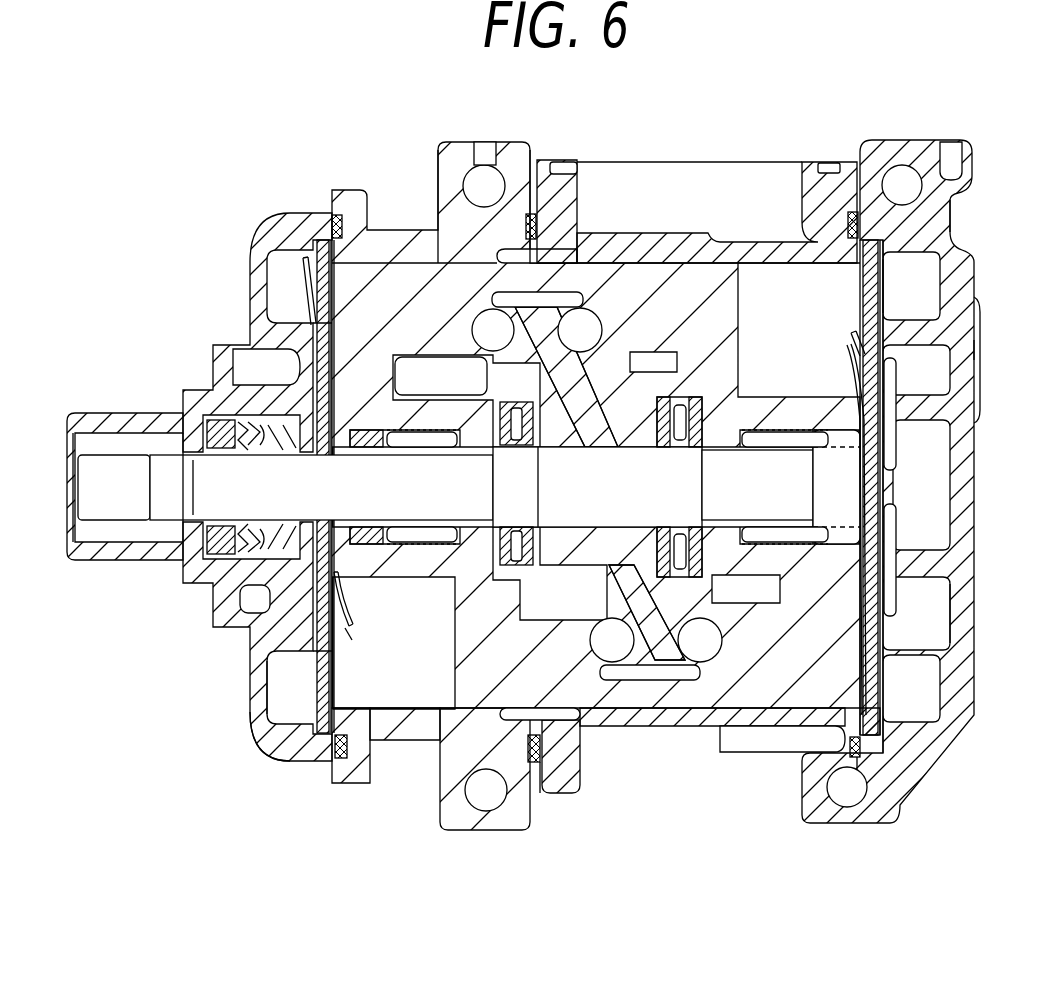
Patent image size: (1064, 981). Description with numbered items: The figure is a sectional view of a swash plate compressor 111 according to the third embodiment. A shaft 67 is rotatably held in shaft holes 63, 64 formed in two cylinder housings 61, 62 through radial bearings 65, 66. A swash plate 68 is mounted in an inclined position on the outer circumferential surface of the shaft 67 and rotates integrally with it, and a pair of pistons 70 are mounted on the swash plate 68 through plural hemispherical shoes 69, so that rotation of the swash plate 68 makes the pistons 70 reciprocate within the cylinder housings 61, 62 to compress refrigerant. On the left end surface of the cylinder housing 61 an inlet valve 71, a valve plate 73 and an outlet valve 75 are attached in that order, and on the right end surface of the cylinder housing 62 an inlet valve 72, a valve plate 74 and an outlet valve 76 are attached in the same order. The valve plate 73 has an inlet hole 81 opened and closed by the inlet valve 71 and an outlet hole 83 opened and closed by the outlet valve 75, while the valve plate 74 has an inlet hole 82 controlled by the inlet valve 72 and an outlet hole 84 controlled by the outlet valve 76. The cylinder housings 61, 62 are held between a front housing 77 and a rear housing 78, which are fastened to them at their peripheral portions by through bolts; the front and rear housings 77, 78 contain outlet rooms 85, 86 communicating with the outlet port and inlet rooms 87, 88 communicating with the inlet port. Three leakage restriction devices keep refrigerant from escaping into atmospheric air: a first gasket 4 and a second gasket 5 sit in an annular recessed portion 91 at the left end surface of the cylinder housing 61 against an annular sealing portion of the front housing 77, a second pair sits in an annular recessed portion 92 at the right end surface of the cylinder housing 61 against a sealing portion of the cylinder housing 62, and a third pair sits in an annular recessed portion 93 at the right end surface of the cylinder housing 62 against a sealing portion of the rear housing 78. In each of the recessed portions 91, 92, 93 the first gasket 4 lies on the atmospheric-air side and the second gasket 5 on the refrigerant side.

The compressor 111 is at (206, 163).
The first gasket 4 is at (333, 758).
The second gasket 5 is at (330, 760).
The cylinder housing 61 is at (450, 192).
The cylinder housing 62 is at (640, 240).
The shaft hole 63 is at (357, 434).
The shaft hole 64 is at (724, 449).
The radial bearing 65 is at (445, 434).
The radial bearing 66 is at (783, 440).
The shaft 67 is at (118, 470).
The swash plate 68 is at (648, 657).
The hemispherical shoes 69 is at (609, 657).
The pistons 70 is at (680, 272).
The inlet valve 71 is at (348, 602).
The inlet valve 72 is at (860, 373).
The valve plate 73 is at (310, 637).
The valve plate 74 is at (890, 548).
The outlet valve 75 is at (312, 697).
The outlet valve 76 is at (960, 255).
The front housing 77 is at (257, 305).
The rear housing 78 is at (960, 382).
The inlet hole 81 is at (352, 641).
The inlet hole 82 is at (847, 347).
The outlet hole 83 is at (327, 693).
The outlet hole 84 is at (870, 290).
The outlet room 85 is at (285, 707).
The outlet room 86 is at (915, 285).
The inlet room 87 is at (245, 597).
The inlet room 88 is at (968, 352).
The annular recessed portion 91 is at (323, 232).
The annular recessed portion 92 is at (533, 230).
The annular recessed portion 93 is at (850, 214).